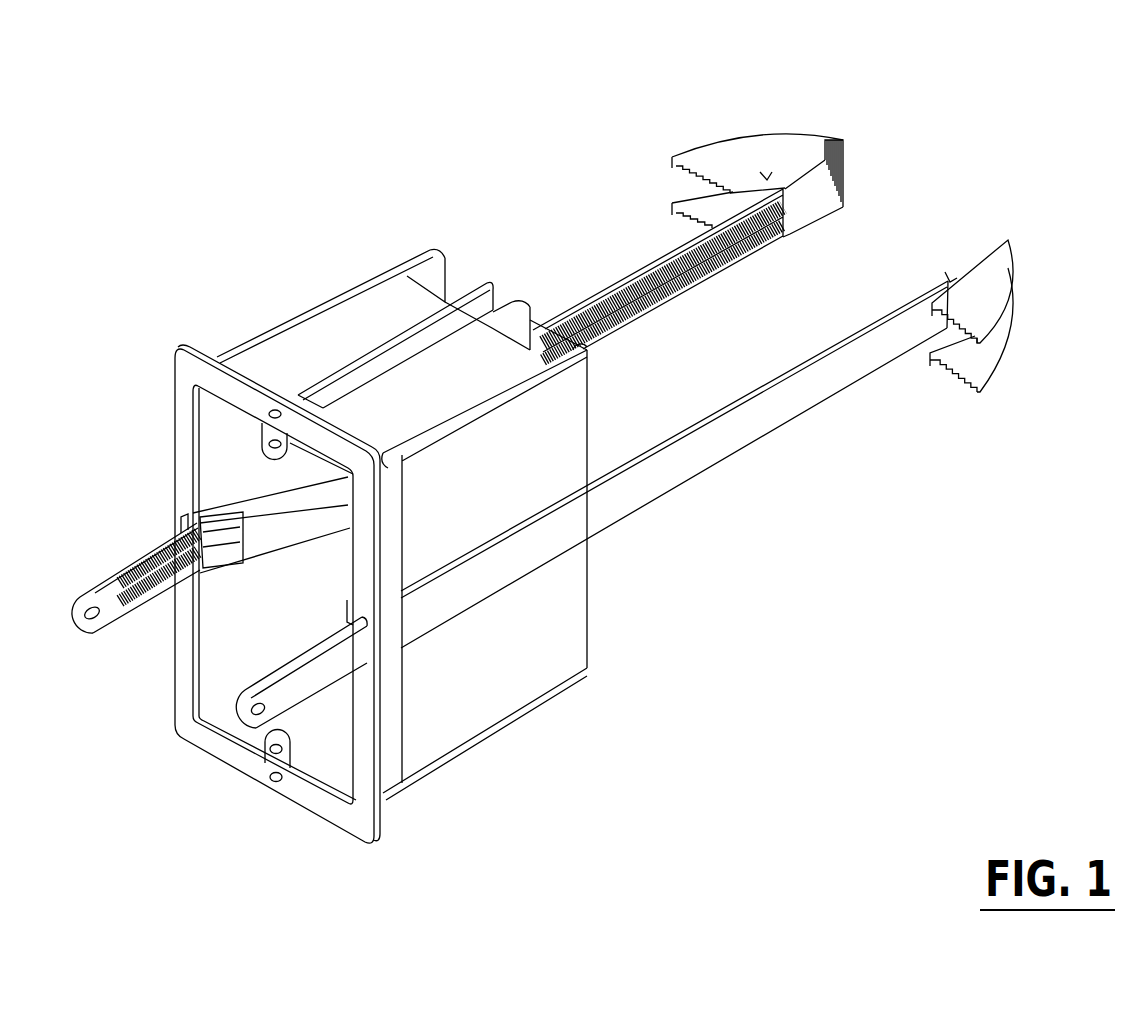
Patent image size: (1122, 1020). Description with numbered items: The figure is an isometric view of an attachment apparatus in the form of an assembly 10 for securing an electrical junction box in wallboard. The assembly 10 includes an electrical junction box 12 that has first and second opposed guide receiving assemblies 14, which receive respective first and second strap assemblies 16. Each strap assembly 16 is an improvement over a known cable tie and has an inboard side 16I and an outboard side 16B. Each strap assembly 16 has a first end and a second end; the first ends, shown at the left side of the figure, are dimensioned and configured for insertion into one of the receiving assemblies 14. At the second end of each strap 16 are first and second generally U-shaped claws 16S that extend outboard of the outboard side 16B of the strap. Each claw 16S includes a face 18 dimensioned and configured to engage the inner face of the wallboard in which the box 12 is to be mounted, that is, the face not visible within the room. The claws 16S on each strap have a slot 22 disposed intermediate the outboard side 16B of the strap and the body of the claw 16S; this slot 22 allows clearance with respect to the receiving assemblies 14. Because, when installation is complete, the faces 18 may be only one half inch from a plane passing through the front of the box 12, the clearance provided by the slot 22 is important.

The assembly 10 is at (593, 454).
The electrical junction box 12 is at (557, 690).
The guide receiving assembly 14 is at (185, 513).
The strap assembly 16 is at (593, 396).
The inboard side 16I is at (753, 249).
The outboard side 16B is at (878, 345).
The claw 16S is at (818, 281).
The face 18 is at (670, 168).
The slot 22 is at (763, 175).